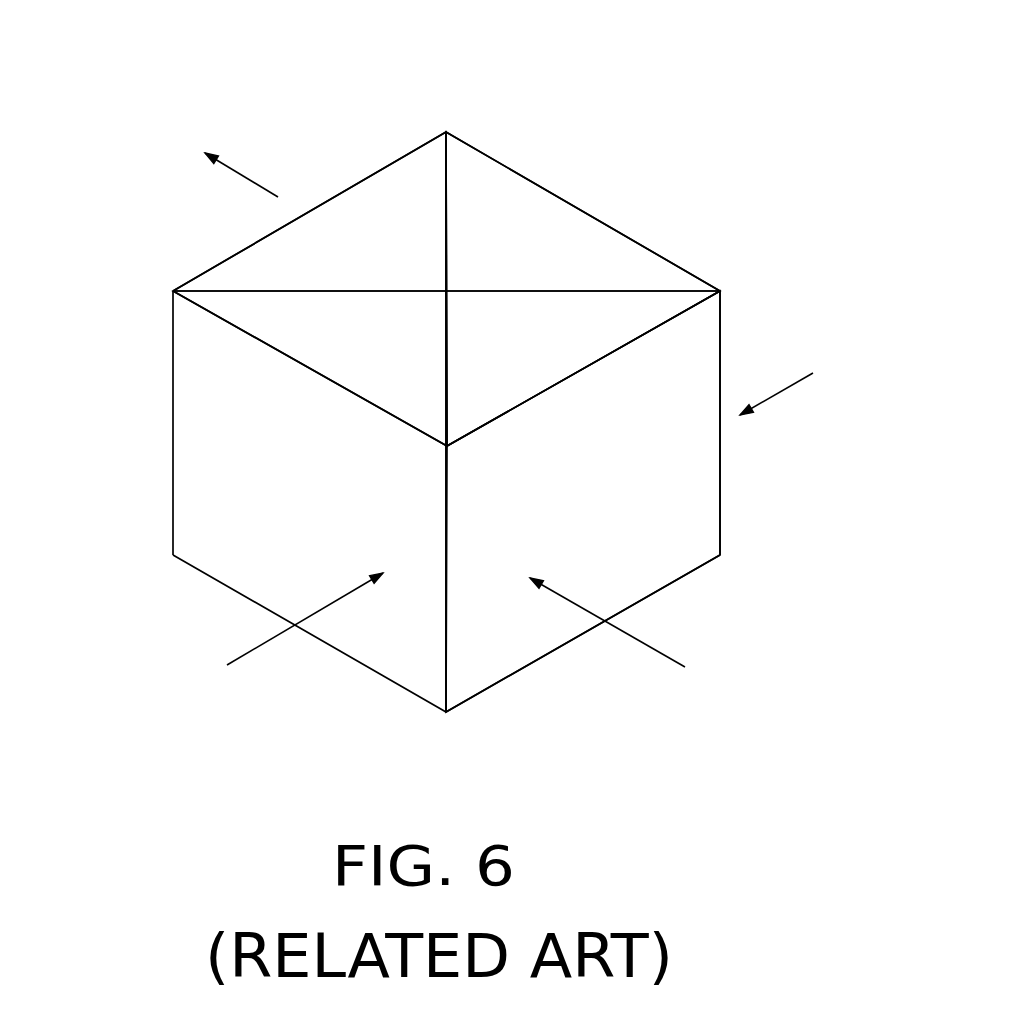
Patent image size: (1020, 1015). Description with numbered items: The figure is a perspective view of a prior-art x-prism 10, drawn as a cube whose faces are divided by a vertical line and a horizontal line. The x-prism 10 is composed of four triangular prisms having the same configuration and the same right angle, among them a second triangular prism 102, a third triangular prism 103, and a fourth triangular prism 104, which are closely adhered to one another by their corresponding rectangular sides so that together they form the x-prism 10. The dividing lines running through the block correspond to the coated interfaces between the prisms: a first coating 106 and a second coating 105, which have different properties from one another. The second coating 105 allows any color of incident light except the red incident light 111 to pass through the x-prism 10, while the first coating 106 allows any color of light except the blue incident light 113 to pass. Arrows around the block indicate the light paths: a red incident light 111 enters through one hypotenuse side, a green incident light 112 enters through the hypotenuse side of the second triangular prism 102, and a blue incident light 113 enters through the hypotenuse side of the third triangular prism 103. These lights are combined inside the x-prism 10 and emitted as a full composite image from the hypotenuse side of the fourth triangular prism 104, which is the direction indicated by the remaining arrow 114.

The x-prism 10 is at (525, 87).
The second triangular prism 102 is at (680, 500).
The third triangular prism 103 is at (577, 237).
The fourth triangular prism 104 is at (248, 273).
The second coating 105 is at (445, 207).
The first coating 106 is at (320, 293).
The red incident light 111 is at (273, 640).
The green incident light 112 is at (647, 653).
The blue incident light 113 is at (787, 390).
The fourth direction arrow 114 is at (243, 175).